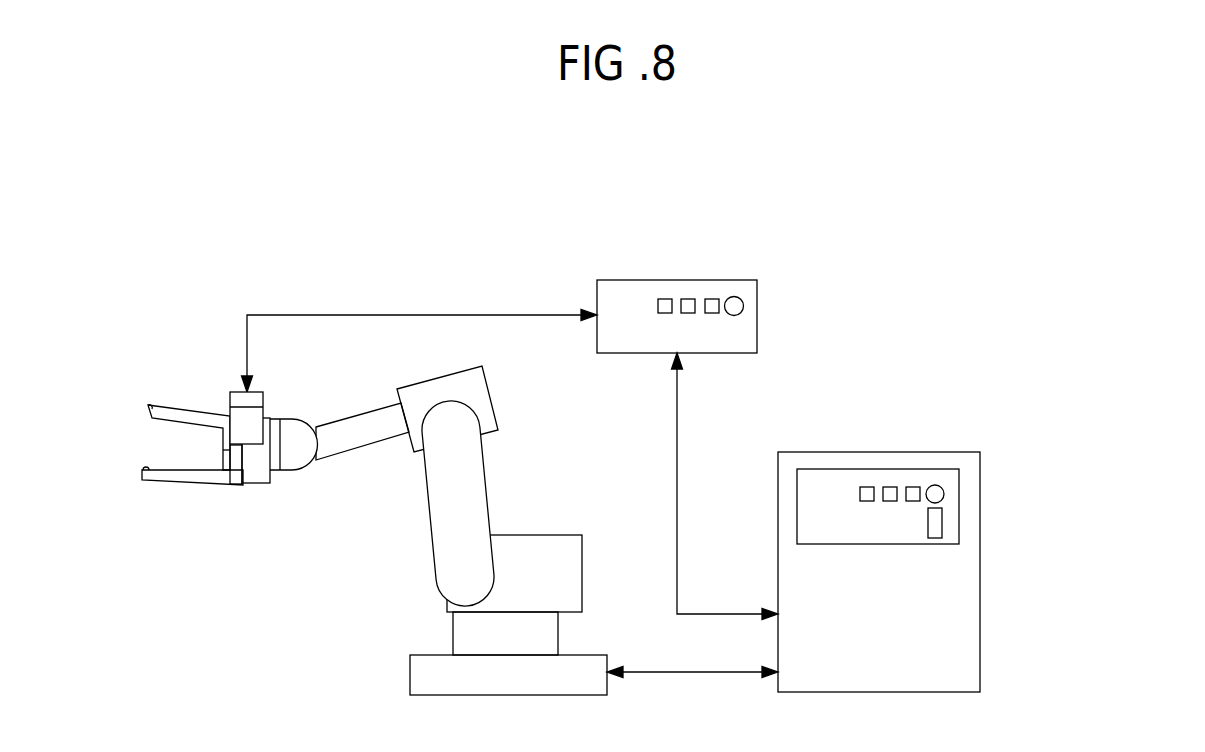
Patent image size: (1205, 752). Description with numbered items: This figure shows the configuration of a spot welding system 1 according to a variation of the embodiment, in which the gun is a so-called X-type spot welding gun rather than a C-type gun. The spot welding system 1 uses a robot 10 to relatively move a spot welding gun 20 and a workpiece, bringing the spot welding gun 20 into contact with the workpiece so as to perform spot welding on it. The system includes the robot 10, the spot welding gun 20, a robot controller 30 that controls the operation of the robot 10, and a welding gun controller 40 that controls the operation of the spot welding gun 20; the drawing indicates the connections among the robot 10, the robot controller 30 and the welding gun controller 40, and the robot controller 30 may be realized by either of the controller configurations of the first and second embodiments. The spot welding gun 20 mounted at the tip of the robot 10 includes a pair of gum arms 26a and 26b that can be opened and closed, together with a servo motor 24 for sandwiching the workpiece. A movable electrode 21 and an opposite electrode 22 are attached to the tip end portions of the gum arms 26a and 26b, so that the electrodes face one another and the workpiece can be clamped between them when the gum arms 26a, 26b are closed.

The spot welding system 1 is at (886, 147).
The robot 10 is at (515, 484).
The spot welding gun 20 is at (126, 290).
The movable electrode 21 is at (150, 408).
The opposite electrode 22 is at (143, 468).
The servo motor 24 is at (263, 391).
The gum arm 26a is at (192, 405).
The gum arm 26b is at (182, 481).
The robot controller 30 is at (980, 535).
The welding gun controller 40 is at (617, 280).